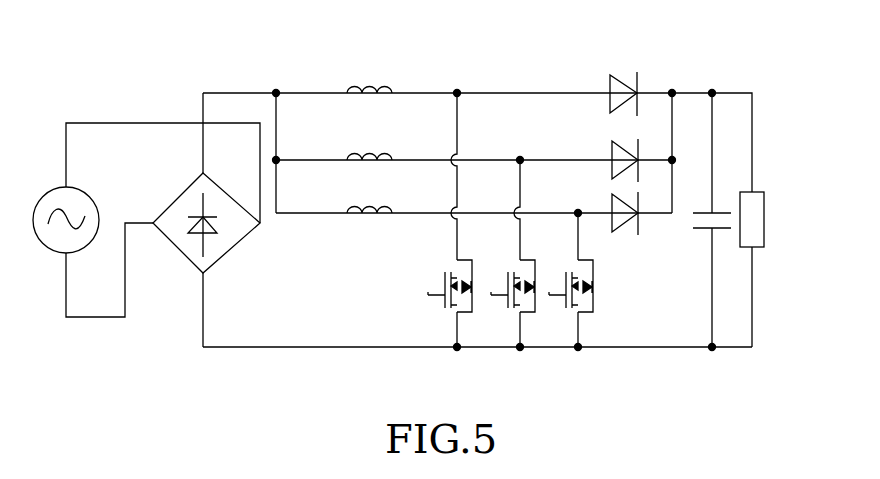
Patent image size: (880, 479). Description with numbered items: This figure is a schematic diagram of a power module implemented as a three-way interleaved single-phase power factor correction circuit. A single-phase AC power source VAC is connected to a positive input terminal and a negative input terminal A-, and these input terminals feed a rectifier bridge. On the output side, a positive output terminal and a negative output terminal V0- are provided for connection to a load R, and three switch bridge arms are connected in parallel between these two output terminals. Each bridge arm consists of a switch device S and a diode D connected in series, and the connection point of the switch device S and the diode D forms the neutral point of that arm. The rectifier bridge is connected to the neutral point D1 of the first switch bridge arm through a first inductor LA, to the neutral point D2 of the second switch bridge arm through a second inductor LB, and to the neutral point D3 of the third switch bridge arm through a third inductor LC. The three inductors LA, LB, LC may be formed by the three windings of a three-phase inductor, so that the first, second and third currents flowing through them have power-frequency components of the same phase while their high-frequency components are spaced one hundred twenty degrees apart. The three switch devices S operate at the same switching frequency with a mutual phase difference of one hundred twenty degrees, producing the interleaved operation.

The neutral point of the first switch bridge arm D1 is at (464, 203).
The neutral point of the second switch bridge arm D2 is at (524, 238).
The neutral point of the third switch bridge arm D3 is at (577, 264).
The first inductor LA is at (369, 76).
The second inductor LB is at (369, 143).
The third inductor LC is at (369, 197).
The diode D is at (625, 136).
The switch device S is at (524, 286).
The load R is at (769, 219).
The single-phase AC power source VAC is at (62, 203).
The negative input terminal A- is at (76, 345).
The negative output terminal V0- is at (784, 348).